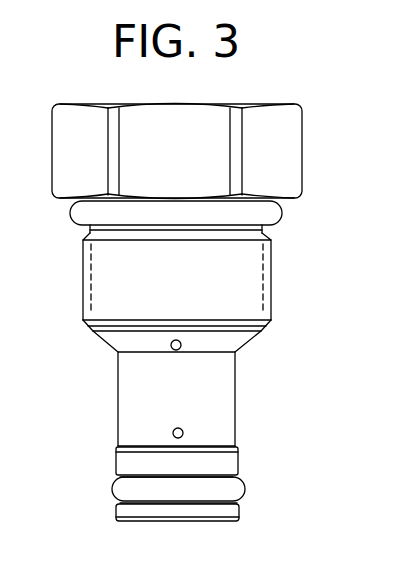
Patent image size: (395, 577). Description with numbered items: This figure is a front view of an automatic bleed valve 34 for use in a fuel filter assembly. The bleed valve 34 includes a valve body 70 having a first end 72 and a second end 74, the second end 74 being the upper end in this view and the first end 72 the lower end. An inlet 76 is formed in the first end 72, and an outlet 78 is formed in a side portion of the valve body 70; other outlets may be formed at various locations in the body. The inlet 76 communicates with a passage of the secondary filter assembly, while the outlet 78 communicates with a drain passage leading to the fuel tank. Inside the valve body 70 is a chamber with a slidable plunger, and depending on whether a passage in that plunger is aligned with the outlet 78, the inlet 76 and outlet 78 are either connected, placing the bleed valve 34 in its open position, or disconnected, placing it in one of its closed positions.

The automatic bleed valve 34 is at (262, 86).
The second end 74 is at (72, 105).
The valve body 70 is at (282, 277).
The outlet 78 is at (183, 429).
The first end 72 is at (119, 522).
The inlet 76 is at (197, 521).